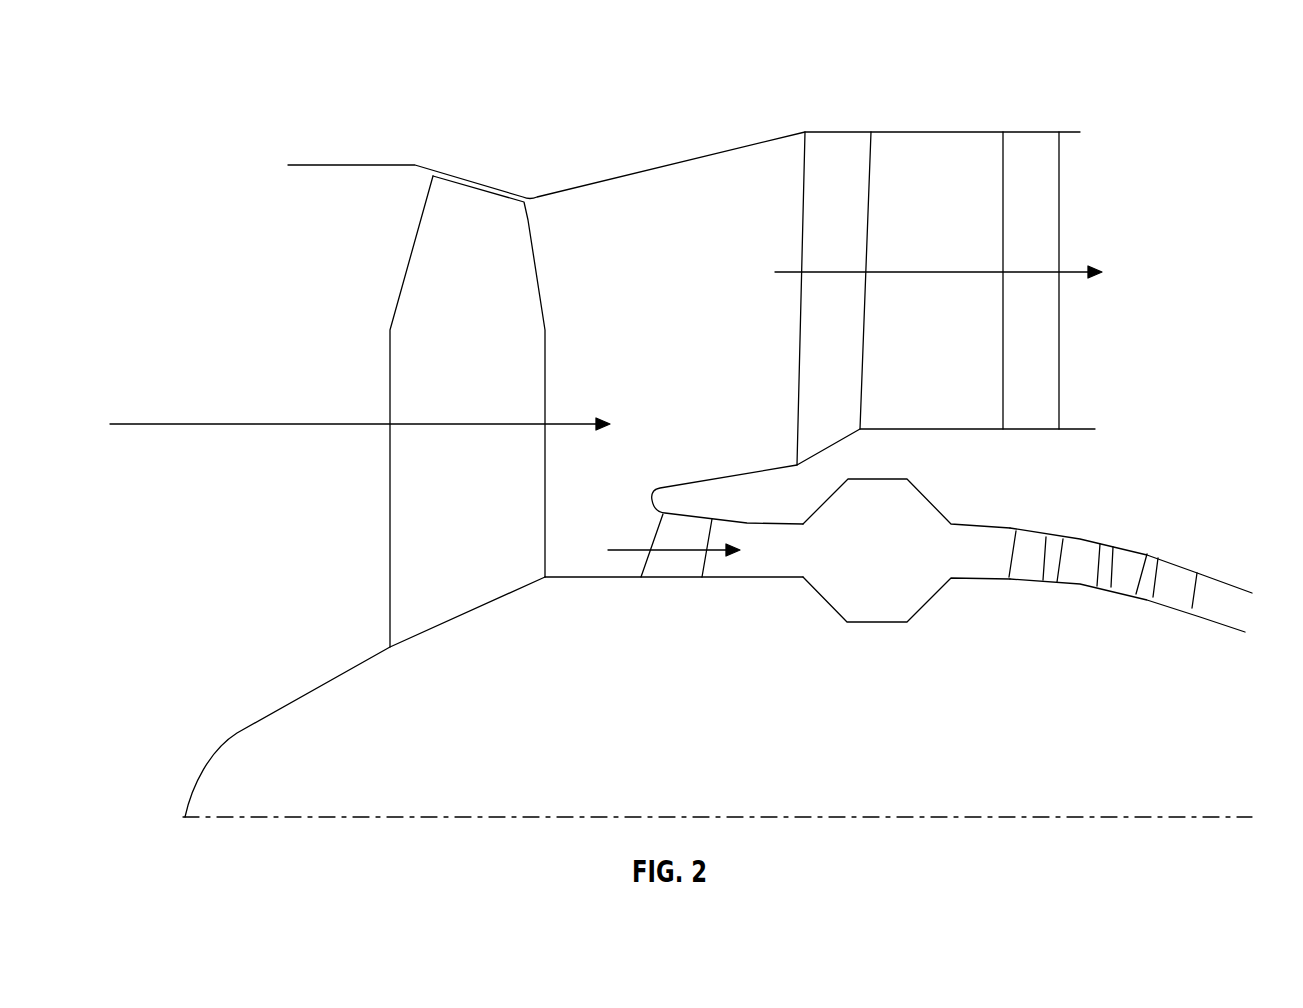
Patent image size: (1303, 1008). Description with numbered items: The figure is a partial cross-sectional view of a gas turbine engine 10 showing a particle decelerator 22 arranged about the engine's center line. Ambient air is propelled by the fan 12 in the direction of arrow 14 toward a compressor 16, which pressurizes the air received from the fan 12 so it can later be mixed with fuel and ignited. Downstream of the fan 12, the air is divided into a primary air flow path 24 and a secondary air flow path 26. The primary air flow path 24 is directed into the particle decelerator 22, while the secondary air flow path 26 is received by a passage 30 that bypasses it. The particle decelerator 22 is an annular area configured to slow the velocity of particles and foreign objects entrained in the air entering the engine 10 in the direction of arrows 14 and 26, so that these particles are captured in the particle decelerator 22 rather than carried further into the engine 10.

The gas turbine engine 10 is at (1088, 77).
The fan 12 is at (407, 589).
The arrow 14 is at (134, 424).
The compressor 16 is at (1117, 557).
The particle decelerator 22 is at (936, 503).
The primary air flow path 24 is at (627, 550).
The secondary air flow path 26 is at (791, 270).
The passage 30 is at (1035, 131).